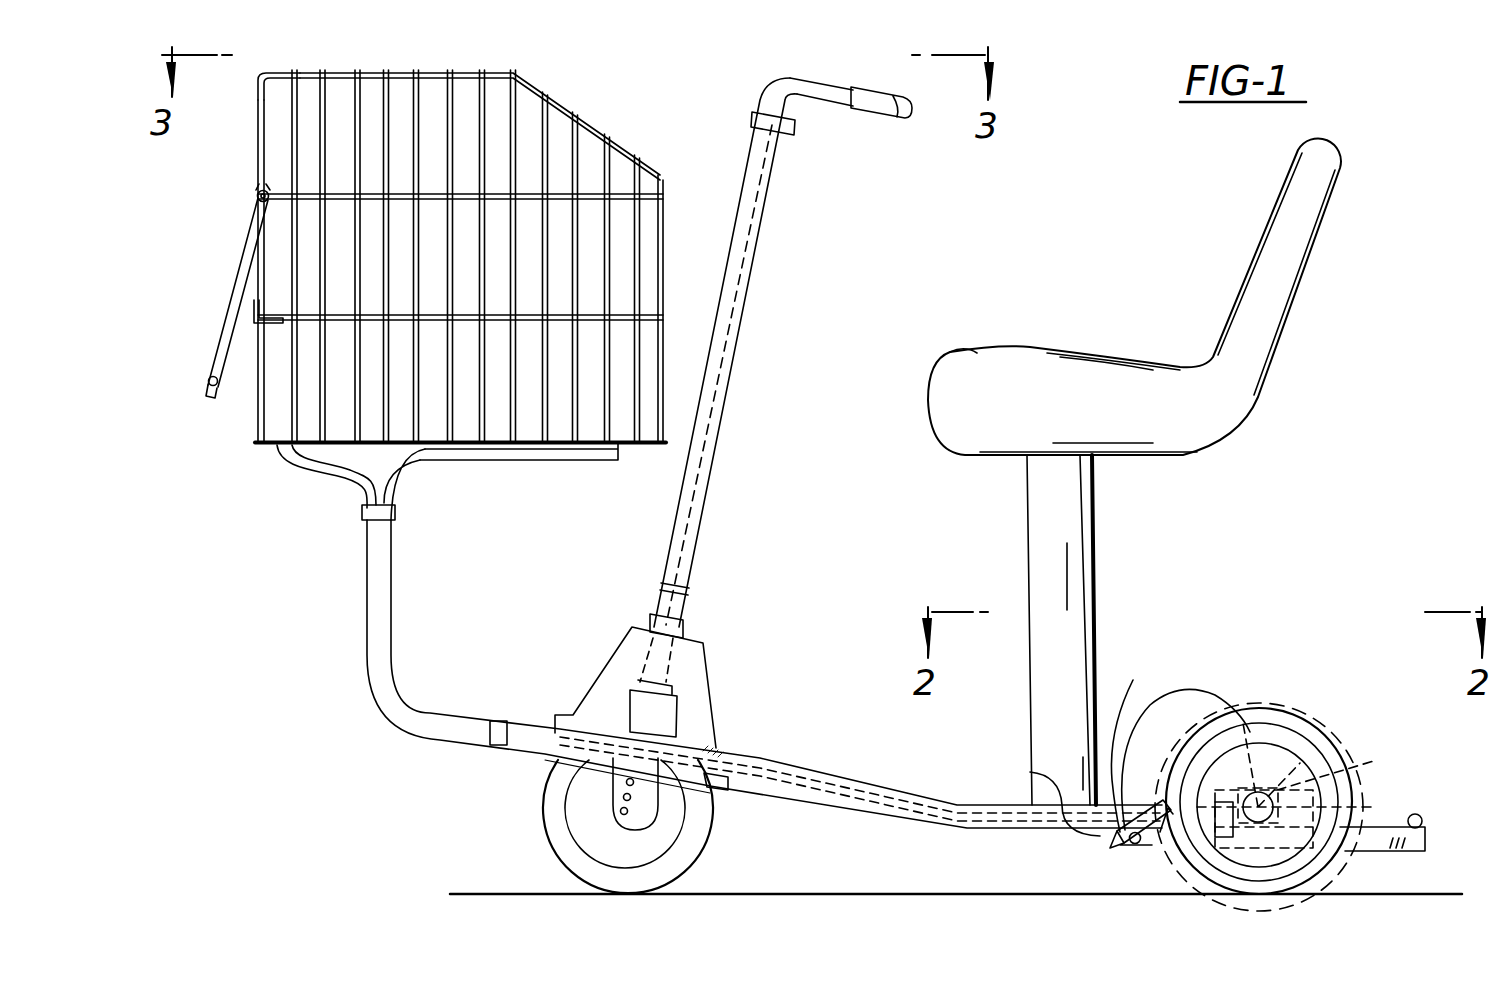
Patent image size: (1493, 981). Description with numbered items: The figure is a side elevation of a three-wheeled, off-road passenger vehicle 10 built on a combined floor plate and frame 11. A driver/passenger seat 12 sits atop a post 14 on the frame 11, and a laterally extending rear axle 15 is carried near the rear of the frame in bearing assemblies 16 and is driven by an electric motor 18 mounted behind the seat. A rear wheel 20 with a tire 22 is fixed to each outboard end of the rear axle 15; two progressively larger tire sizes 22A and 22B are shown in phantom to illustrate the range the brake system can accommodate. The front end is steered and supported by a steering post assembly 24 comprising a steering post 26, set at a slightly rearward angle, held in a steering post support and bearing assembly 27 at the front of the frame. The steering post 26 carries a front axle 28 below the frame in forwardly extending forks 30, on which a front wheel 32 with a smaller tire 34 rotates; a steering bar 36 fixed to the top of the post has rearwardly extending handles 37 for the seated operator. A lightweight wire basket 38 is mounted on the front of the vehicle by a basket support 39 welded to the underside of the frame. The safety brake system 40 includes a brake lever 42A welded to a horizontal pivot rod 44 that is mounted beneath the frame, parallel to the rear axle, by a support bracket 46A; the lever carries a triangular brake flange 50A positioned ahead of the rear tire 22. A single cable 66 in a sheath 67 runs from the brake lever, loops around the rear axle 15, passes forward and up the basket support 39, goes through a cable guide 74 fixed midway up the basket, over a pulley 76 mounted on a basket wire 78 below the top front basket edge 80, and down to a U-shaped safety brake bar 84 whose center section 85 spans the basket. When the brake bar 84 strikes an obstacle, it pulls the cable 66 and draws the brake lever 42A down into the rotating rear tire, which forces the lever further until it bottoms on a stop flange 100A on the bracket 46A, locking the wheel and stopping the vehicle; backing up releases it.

The off-road passenger vehicle 10 is at (784, 791).
The combined floor plate and frame 11 is at (837, 775).
The driver/passenger seat 12 is at (1085, 356).
The post 14 is at (1095, 552).
The rear axle 15 is at (1292, 805).
The bearing assemblies 16 is at (1335, 800).
The electric motor 18 is at (1197, 702).
The rear wheel 20 is at (1302, 762).
The rear tire 22 is at (1300, 740).
The larger diameter rear tire 22A is at (1272, 735).
The larger diameter rear tire 22B is at (1352, 762).
The steering post assembly 24 is at (781, 335).
The steering post 26 is at (735, 400).
The steering post support and bearing assembly 27 is at (705, 688).
The front axle 28 is at (620, 843).
The fork 30 is at (658, 802).
The front wheel 32 is at (574, 822).
The front tire 34 is at (548, 833).
The steering bar 36 is at (845, 94).
The handle 37 is at (885, 108).
The wire basket 38 is at (408, 248).
The basket support 39 is at (394, 590).
The safety brake system 40 is at (1111, 866).
The brake lever 42A is at (1136, 850).
The pivot rod 44 is at (1108, 850).
The brake lever support bracket 46A is at (1030, 772).
The brake flange 50A is at (1134, 690).
The cable 66 is at (245, 262).
The sheath 67 is at (318, 480).
The cable guide 74 is at (255, 322).
The pulley 76 is at (257, 195).
The basket wire 78 is at (266, 193).
The top front basket edge 80 is at (260, 75).
The safety brake bar 84 is at (219, 394).
The center section 85 is at (208, 383).
The stop flange 100A is at (1166, 848).